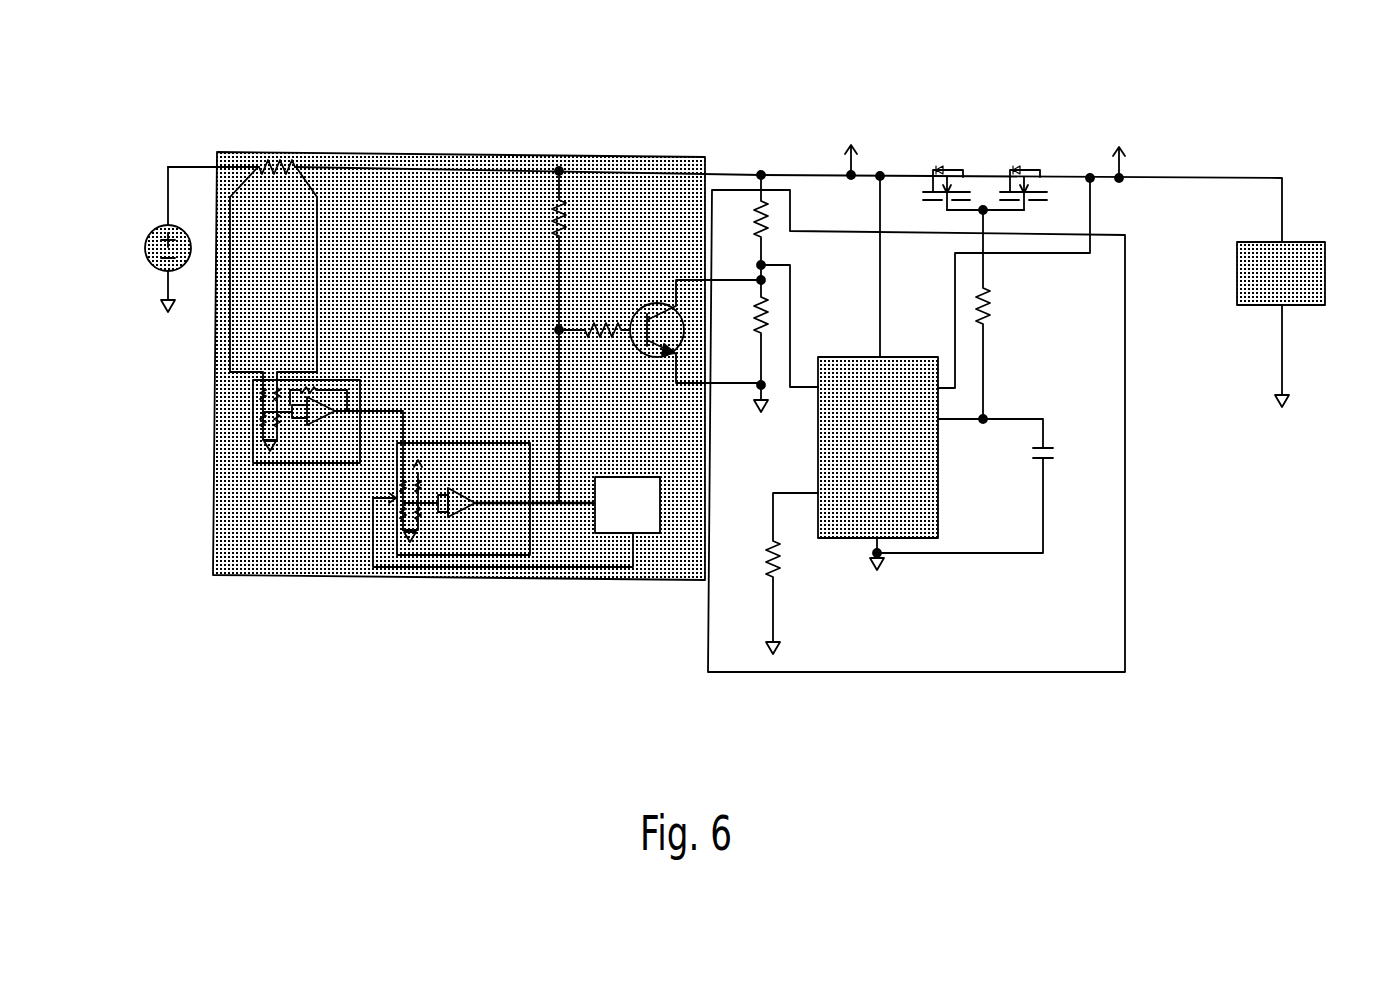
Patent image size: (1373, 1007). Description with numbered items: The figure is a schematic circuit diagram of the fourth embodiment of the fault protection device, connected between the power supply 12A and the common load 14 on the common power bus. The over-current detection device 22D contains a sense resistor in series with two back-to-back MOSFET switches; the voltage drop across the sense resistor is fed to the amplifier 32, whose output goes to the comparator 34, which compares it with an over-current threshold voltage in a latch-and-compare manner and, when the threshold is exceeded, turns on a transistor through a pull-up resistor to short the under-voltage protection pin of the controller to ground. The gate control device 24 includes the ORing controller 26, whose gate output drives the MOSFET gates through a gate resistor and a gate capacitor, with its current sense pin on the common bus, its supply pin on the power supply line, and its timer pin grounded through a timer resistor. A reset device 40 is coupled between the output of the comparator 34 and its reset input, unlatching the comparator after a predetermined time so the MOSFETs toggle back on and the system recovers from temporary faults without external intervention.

The power supply 12A is at (144, 258).
The over-current detection device 22D is at (487, 323).
The amplifier 32 is at (345, 380).
The comparator 34 is at (430, 444).
The reset device 40 is at (604, 478).
The gate control device 24 is at (996, 395).
The ORing controller 26 is at (938, 481).
The common load 14 is at (1327, 282).